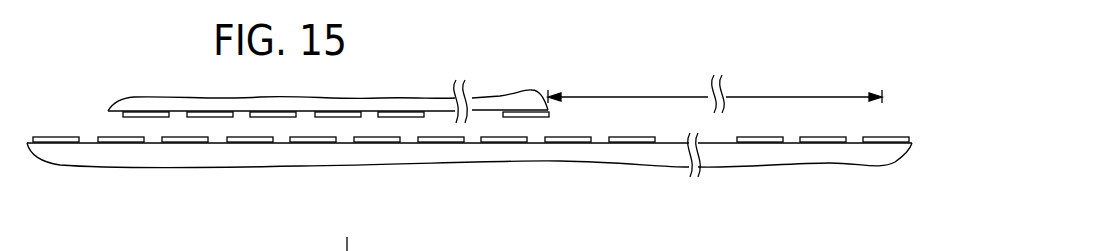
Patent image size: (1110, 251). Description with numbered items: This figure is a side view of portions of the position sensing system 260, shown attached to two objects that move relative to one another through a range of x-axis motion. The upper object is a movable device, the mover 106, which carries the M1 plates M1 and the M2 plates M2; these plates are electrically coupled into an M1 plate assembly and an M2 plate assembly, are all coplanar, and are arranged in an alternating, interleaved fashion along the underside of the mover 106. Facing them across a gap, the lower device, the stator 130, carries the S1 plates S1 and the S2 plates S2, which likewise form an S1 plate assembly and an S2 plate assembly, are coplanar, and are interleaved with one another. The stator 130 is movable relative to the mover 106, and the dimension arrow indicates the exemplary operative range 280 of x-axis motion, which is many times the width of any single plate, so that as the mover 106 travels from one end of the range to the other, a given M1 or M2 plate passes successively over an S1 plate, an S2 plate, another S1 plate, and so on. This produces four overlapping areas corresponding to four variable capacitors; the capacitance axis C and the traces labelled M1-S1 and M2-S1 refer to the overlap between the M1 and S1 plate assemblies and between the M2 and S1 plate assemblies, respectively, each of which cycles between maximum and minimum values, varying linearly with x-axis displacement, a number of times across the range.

The mover 106 is at (430, 100).
The lower substrate / electrode layer 130 is at (188, 160).
The dimension / pitch span 280 is at (620, 97).
The position sensing system 260 is at (753, 50).
The M1 plate M1 is at (138, 112).
The M2 plate M2 is at (213, 110).
The S1 plate S1 is at (53, 145).
The S2 plate S2 is at (115, 145).
The capacitance indicator C is at (336, 241).
The M1 and S1 plate assembly overlap M1-S1 is at (450, 250).
The M2 and S1 plate assembly overlap M2-S1 is at (580, 250).